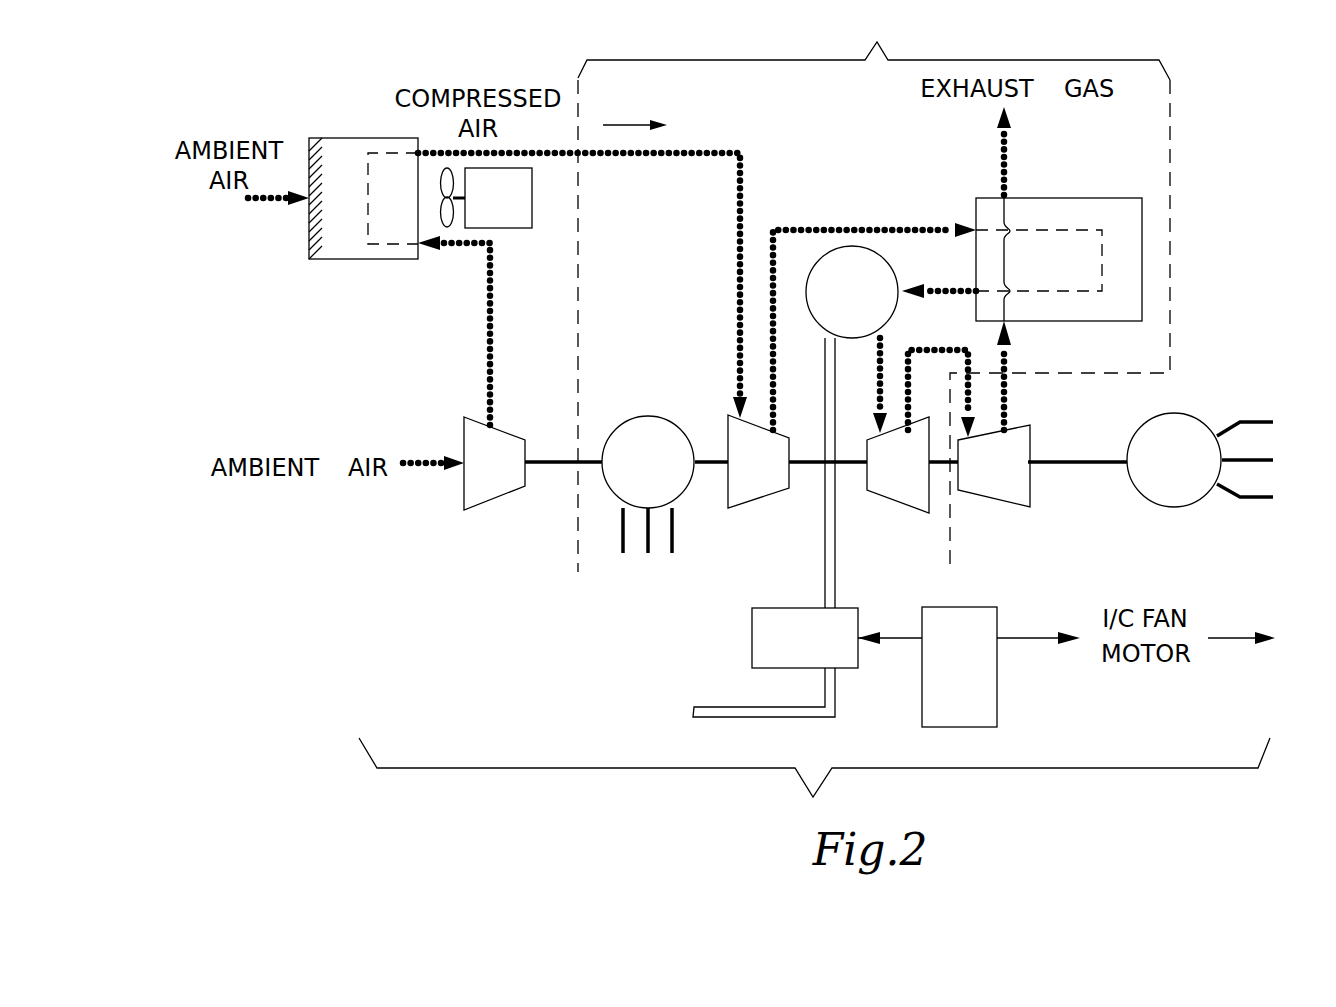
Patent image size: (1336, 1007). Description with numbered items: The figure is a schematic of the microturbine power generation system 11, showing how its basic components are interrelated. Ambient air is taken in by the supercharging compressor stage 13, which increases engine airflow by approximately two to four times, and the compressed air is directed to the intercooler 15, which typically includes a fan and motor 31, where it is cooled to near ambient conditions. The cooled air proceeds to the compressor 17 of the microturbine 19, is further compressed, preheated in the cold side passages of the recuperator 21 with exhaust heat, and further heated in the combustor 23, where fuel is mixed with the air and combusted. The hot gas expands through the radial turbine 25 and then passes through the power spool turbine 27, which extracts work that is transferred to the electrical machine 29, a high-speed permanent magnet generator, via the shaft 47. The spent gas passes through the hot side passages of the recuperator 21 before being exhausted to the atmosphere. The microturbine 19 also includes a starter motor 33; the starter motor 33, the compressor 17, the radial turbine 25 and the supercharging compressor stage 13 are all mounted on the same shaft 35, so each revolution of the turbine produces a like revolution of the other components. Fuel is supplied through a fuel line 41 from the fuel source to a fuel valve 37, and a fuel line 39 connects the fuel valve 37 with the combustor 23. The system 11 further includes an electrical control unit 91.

The microturbine power generation system 11 is at (785, 794).
The supercharging compressor stage 13 is at (457, 483).
The intercooler 15 is at (334, 237).
The compressor 17 is at (773, 482).
The microturbine 19 is at (852, 47).
The recuperator 21 is at (1113, 213).
The combustor 23 is at (867, 262).
The radial turbine 25 is at (910, 502).
The power spool turbine 27 is at (1017, 493).
The electrical machine 29 is at (1190, 490).
The fan and motor 31 is at (510, 183).
The starter motor 33 is at (683, 495).
The shaft 35 is at (715, 462).
The fuel valve 37 is at (763, 643).
The fuel line 39 is at (828, 552).
The fuel line 41 is at (743, 718).
The shaft 47 is at (1093, 463).
The electrical control unit 91 is at (978, 690).